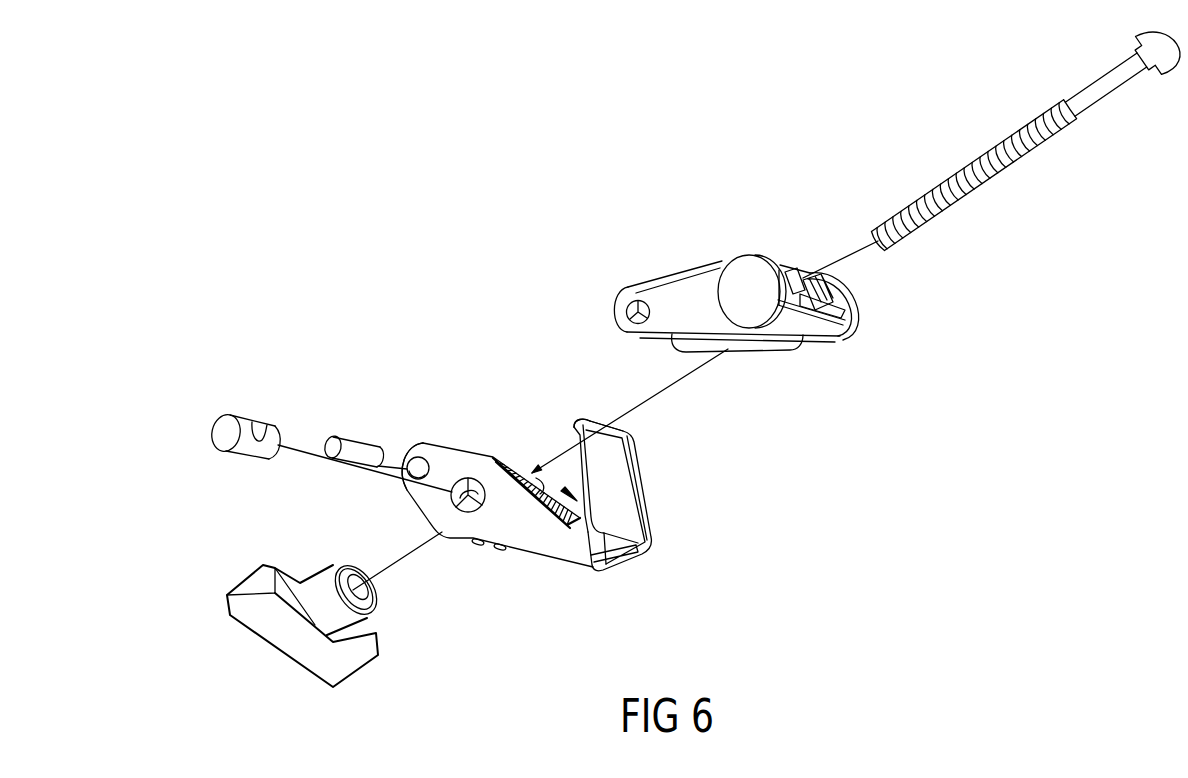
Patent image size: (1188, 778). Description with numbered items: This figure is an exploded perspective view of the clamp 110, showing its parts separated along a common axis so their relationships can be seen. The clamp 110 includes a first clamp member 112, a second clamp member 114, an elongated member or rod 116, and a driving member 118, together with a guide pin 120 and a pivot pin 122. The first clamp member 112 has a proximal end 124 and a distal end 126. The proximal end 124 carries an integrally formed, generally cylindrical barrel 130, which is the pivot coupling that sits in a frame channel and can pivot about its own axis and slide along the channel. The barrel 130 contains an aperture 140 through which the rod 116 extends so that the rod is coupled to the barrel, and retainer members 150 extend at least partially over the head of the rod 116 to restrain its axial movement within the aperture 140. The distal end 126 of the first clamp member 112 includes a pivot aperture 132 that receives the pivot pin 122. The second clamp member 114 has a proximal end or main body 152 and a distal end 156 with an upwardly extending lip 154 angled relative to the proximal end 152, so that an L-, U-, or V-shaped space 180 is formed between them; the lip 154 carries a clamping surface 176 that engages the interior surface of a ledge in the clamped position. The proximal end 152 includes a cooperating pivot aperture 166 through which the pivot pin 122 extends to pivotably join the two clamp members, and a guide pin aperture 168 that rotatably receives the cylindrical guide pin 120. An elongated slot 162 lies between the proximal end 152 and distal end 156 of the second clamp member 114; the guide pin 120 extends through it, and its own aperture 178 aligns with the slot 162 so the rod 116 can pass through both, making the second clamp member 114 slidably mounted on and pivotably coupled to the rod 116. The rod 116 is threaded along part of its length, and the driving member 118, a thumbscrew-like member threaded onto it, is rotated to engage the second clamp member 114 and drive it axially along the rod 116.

The clamp 110 is at (400, 205).
The first clamp member 112 is at (705, 260).
The second clamp member 114 is at (560, 560).
The elongated member or rod 116 is at (1076, 118).
The driving member 118 is at (285, 628).
The guide pin 120 is at (222, 430).
The pivot pin 122 is at (363, 447).
The proximal end 124 is at (858, 301).
The distal end 126 is at (617, 308).
The barrel 130 is at (800, 336).
The pivot aperture 132 is at (650, 300).
The aperture 140 is at (812, 340).
The retainer members 150 is at (807, 276).
The proximal end 152 is at (404, 452).
The upwardly extending portion or lip 154 is at (590, 470).
The distal end 156 is at (592, 425).
The slot 162 is at (523, 464).
The pivot aperture 166 is at (418, 458).
The guide pin aperture 168 is at (452, 500).
The clamping surface 176 is at (574, 418).
The aperture of the guide pin 178 is at (259, 428).
The space 180 is at (594, 517).